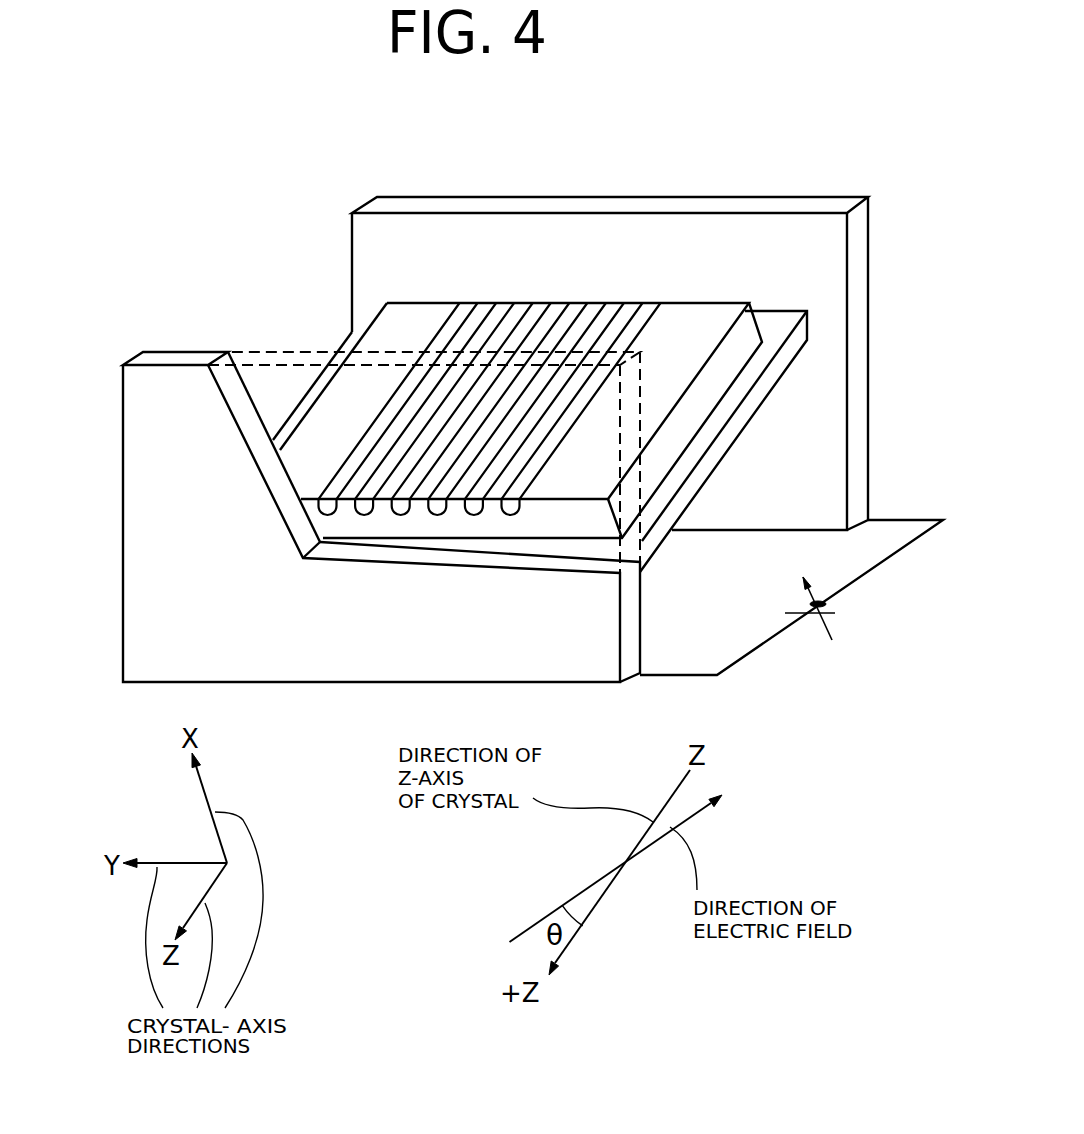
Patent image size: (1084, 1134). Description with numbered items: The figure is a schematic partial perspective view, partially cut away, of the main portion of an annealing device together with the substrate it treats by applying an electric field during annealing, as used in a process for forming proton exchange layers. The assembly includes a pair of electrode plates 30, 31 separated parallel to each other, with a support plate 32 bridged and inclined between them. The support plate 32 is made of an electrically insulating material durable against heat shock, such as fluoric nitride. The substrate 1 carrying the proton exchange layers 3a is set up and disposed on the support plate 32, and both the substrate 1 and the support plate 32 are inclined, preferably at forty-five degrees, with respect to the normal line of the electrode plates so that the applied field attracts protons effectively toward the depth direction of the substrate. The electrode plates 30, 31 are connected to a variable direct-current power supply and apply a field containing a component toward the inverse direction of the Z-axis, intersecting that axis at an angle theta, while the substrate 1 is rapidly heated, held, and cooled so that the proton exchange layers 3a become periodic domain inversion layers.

The substrate 1 is at (748, 333).
The proton exchange layers 3a is at (507, 303).
The electrode plate 30 is at (362, 292).
The electrode plate 31 is at (142, 406).
The support plate 32 is at (772, 380).